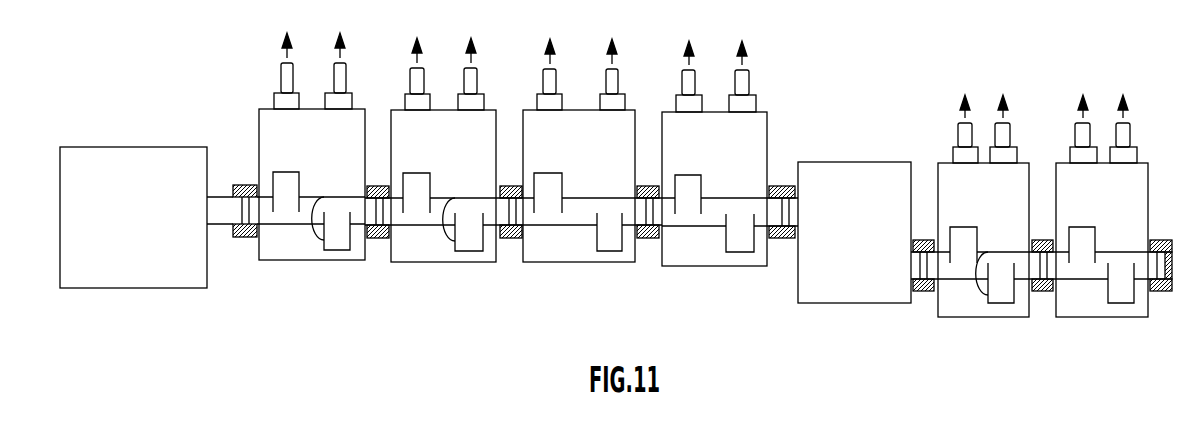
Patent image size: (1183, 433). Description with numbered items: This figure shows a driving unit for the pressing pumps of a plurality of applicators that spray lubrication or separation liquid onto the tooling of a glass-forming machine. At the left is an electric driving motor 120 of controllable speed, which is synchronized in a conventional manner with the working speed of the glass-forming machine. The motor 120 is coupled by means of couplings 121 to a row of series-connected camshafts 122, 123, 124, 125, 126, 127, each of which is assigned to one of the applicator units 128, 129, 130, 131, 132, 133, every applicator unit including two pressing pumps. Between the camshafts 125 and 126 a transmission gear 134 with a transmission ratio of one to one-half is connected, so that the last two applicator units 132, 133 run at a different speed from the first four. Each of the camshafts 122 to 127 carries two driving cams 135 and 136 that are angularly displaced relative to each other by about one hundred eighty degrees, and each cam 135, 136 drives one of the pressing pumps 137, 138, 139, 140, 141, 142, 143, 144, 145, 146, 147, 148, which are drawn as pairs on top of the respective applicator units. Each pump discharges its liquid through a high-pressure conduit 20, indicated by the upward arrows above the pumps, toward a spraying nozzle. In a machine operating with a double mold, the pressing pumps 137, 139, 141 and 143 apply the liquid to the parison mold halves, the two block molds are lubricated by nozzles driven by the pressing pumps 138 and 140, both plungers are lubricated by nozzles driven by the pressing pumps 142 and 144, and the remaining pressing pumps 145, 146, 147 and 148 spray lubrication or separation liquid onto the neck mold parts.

The high-pressure conduit 20 is at (334, 82).
The electric driving motor 120 is at (143, 289).
The couplings 121 is at (243, 238).
The camshaft 122 is at (290, 229).
The camshaft 123 is at (433, 229).
The camshaft 124 is at (540, 229).
The camshaft 125 is at (708, 230).
The camshaft 126 is at (948, 283).
The camshaft 127 is at (1078, 283).
The applicator unit 128 is at (322, 261).
The applicator unit 129 is at (466, 263).
The applicator unit 130 is at (592, 264).
The applicator unit 131 is at (682, 267).
The applicator unit 132 is at (987, 318).
The applicator unit 133 is at (1104, 318).
The transmission gear 134 is at (822, 304).
The driving cam 135 is at (285, 172).
The driving cam 136 is at (315, 204).
The pressing pump 137 is at (274, 100).
The pressing pump 138 is at (352, 102).
The pressing pump 139 is at (404, 98).
The pressing pump 140 is at (484, 100).
The pressing pump 141 is at (537, 102).
The pressing pump 142 is at (625, 99).
The pressing pump 143 is at (676, 102).
The pressing pump 144 is at (756, 102).
The pressing pump 145 is at (953, 150).
The pressing pump 146 is at (1017, 150).
The pressing pump 147 is at (1070, 155).
The pressing pump 148 is at (1137, 153).